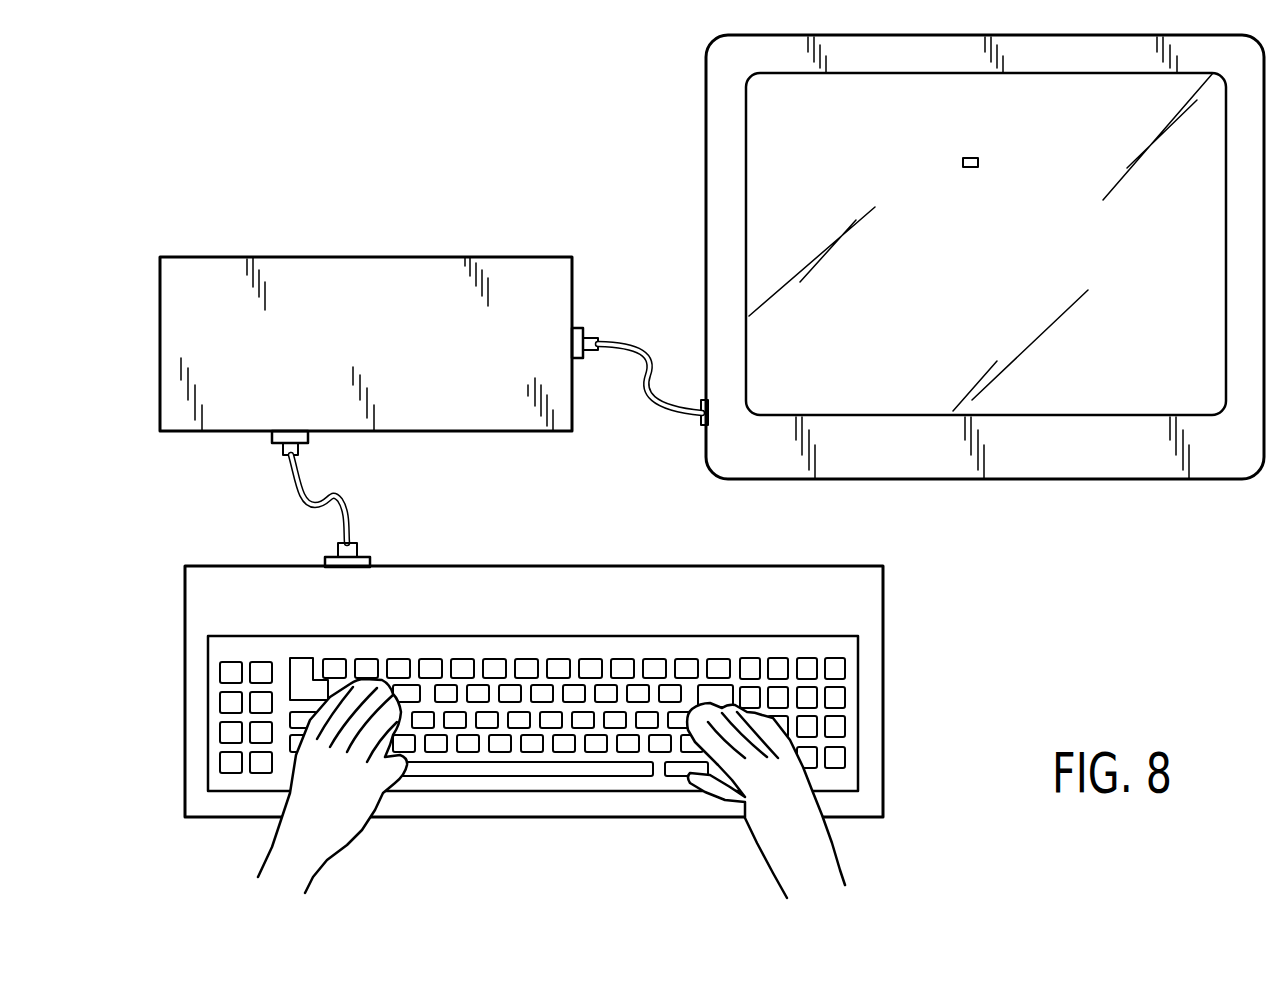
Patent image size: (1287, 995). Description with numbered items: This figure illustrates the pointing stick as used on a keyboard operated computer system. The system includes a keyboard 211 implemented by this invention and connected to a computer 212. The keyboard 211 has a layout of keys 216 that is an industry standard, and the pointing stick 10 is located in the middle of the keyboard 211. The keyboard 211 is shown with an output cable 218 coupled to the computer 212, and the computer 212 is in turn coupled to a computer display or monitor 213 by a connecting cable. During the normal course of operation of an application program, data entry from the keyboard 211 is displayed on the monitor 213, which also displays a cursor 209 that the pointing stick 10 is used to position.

The computer display or monitor 213 is at (706, 192).
The cursor 209 is at (966, 169).
The computer 212 is at (360, 257).
The keys 216 is at (636, 341).
The output cable 218 is at (288, 489).
The keyboard 211 is at (884, 607).
The pointing stick 10 is at (543, 713).